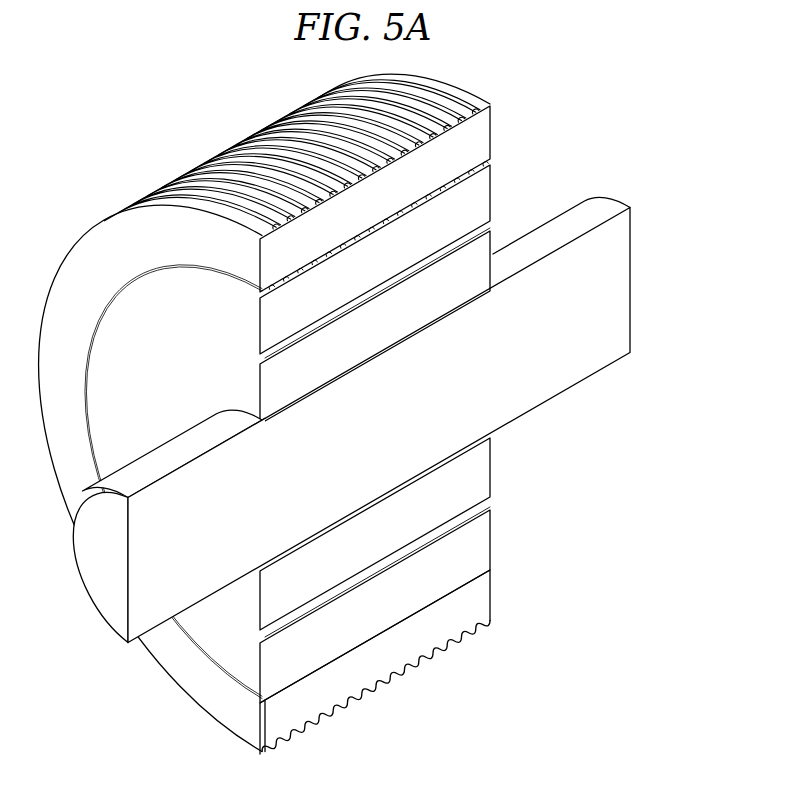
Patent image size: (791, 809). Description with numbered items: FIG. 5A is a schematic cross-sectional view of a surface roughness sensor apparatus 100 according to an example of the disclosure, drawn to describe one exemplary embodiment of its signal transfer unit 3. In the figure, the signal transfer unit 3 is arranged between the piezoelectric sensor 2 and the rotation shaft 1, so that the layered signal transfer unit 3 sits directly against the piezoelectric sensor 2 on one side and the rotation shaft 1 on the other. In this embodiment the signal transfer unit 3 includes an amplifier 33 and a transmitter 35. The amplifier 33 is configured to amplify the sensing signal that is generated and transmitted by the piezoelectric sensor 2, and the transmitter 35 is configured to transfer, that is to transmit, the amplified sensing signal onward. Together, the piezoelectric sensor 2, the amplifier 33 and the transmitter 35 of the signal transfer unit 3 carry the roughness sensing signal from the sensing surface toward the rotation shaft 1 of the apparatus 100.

The sensor device 100 is at (104, 108).
The rotation shaft 1 is at (165, 560).
The piezoelectric sensor 2 is at (463, 137).
The signal transfer unit 3 is at (650, 103).
The amplifier 33 is at (472, 193).
The transmitter 35 is at (495, 253).